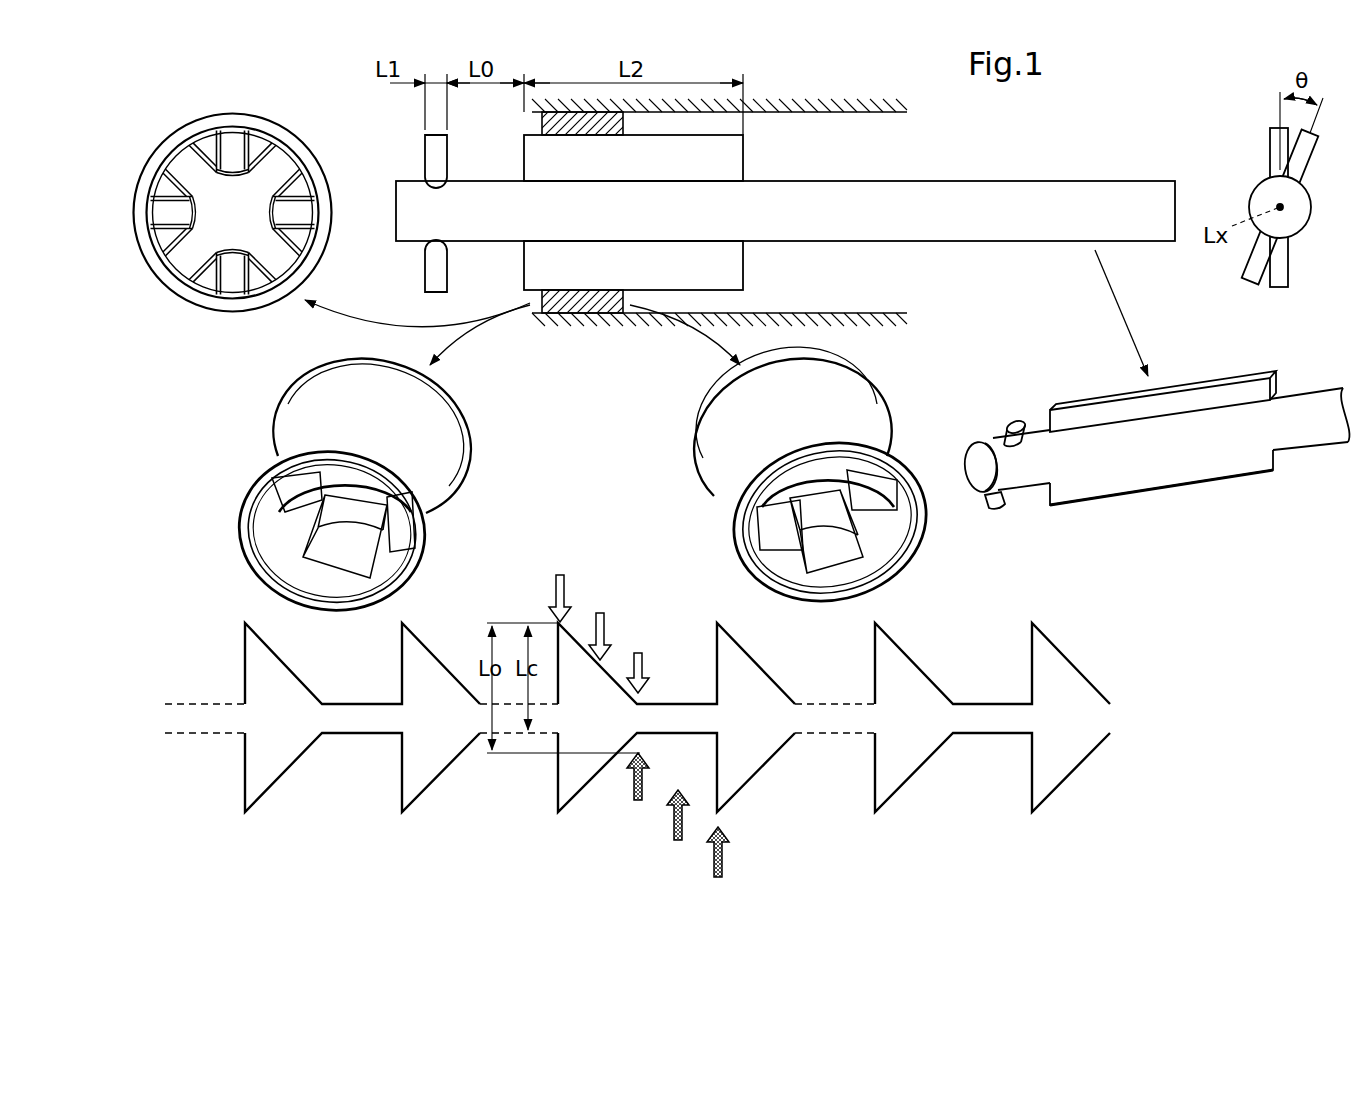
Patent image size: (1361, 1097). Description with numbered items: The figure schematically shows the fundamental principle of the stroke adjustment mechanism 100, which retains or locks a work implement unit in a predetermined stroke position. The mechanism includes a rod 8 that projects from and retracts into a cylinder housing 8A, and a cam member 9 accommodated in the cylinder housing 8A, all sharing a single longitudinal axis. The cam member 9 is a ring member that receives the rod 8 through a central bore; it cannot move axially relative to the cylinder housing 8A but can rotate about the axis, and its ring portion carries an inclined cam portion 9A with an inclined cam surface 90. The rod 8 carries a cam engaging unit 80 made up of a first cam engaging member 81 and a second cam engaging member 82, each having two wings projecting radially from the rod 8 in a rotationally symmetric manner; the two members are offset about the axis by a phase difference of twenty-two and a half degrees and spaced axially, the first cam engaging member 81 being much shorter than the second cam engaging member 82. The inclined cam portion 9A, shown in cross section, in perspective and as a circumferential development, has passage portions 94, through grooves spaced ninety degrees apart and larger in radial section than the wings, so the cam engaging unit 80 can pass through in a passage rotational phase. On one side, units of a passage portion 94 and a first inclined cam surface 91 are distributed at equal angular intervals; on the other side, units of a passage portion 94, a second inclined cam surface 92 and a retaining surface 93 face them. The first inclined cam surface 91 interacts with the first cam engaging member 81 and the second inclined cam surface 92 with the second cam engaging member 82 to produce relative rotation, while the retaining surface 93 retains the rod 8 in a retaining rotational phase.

The rod 8 is at (975, 182).
The cylinder housing 8A is at (797, 103).
The cam member 9 is at (150, 152).
The inclined cam portion 9A is at (234, 184).
The cam engaging unit 80 is at (848, 469).
The first cam engaging member 81 is at (432, 165).
The second cam engaging member 82 is at (740, 272).
The inclined cam surface 90 is at (615, 441).
The first inclined cam surface 91 is at (977, 658).
The second inclined cam surface 92 is at (905, 525).
The retaining surface 93 is at (233, 170).
The passage portion 94 is at (278, 167).
The stroke adjustment mechanism 100 is at (1068, 156).